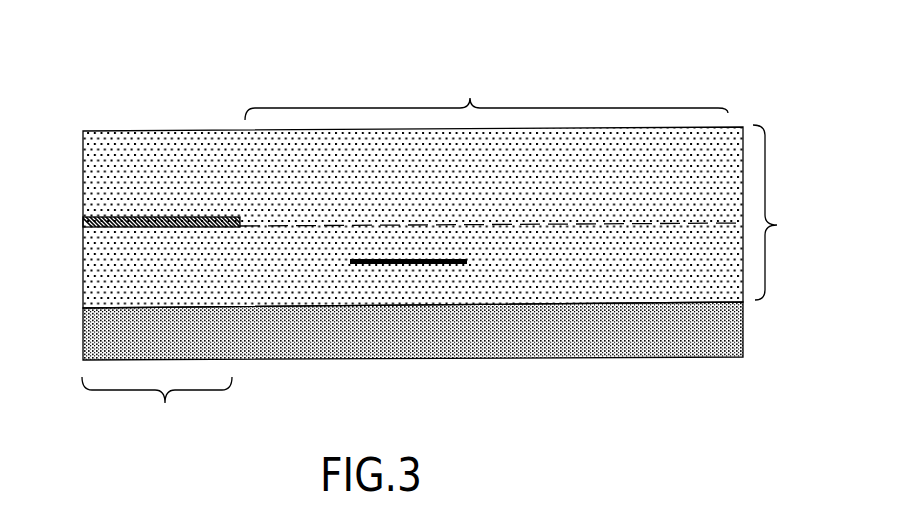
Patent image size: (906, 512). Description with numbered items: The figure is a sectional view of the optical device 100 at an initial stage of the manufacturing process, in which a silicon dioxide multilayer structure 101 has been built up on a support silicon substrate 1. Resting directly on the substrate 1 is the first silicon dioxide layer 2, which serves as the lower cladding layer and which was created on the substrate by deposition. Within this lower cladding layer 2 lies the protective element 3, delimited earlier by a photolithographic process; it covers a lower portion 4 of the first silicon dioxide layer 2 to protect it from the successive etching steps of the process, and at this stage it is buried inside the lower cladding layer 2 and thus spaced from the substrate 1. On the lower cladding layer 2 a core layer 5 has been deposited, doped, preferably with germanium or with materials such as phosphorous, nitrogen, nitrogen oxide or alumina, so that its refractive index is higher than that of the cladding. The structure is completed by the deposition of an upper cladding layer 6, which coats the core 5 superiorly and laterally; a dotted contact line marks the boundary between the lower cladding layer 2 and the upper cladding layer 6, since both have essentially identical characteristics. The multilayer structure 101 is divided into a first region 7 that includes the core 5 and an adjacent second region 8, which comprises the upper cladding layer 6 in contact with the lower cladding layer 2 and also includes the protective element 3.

The silicon substrate 1 is at (100, 332).
The first silicon dioxide layer 2 is at (100, 272).
The protective element 3 is at (422, 265).
The lower portion 4 is at (373, 268).
The core layer 5 is at (85, 221).
The upper cladding layer 6 is at (722, 157).
The first region 7 is at (157, 409).
The second region 8 is at (469, 92).
The optical device 100 is at (128, 493).
The multilayer structure 101 is at (790, 212).